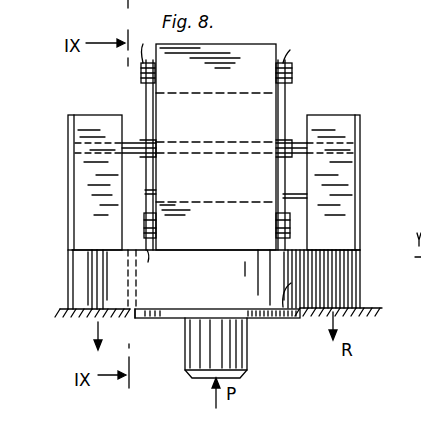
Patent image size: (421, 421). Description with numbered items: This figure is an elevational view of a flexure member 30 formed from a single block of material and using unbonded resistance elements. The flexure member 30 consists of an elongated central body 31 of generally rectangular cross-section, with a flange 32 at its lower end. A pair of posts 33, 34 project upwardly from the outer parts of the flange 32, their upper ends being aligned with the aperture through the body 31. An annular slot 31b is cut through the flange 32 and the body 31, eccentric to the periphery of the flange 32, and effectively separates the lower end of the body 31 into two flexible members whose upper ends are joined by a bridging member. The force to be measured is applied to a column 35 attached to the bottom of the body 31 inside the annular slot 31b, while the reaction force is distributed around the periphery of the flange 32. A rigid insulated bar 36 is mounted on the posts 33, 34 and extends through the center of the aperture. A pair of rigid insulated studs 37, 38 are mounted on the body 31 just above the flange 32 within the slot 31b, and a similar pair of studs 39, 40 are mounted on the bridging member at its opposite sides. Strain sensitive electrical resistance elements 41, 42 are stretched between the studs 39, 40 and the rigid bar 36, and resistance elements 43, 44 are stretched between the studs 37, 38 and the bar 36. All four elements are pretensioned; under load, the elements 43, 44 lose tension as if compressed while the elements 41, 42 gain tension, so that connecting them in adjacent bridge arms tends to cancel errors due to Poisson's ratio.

The flexure member 30 is at (39, 167).
The elongated central body 31 is at (255, 55).
The annular slot 31b is at (278, 320).
The flange 32 is at (72, 290).
The post 33 is at (83, 118).
The post 34 is at (349, 128).
The column 35 is at (238, 362).
The rigid insulated bar 36 is at (290, 175).
The rigid insulated stud 37 is at (146, 230).
The rigid insulated stud 38 is at (290, 222).
The stud 39 is at (143, 77).
The stud 40 is at (292, 72).
The strain sensitive electrical resistance element 41 is at (143, 98).
The strain sensitive electrical resistance element 42 is at (286, 97).
The strain sensitive electrical resistance element 43 is at (145, 195).
The strain sensitive electrical resistance element 44 is at (283, 198).